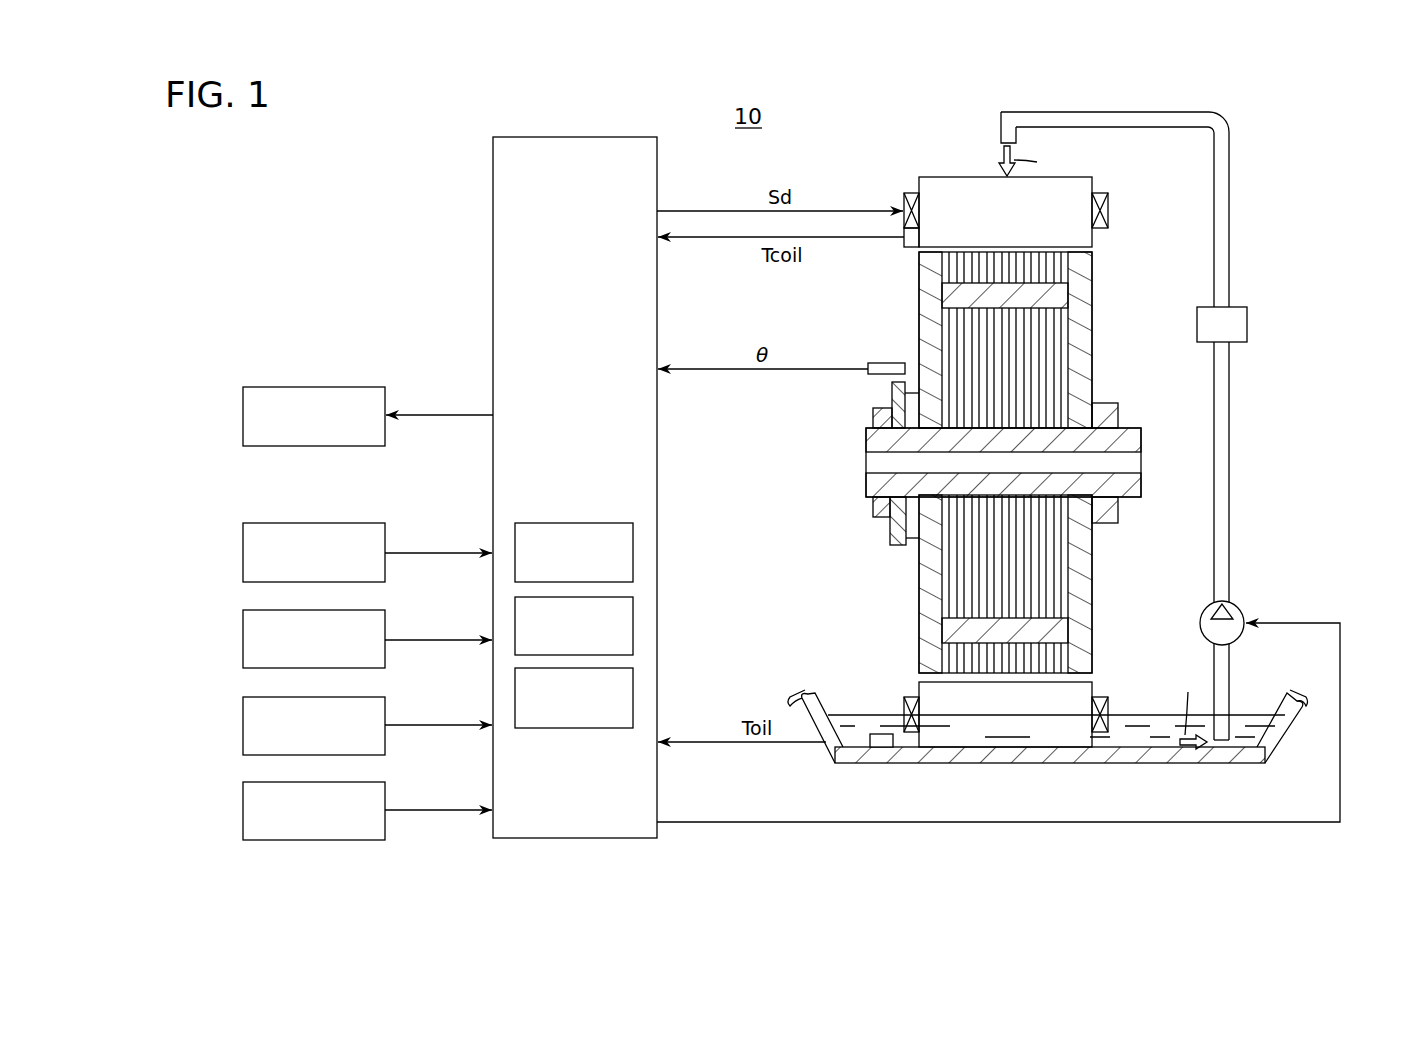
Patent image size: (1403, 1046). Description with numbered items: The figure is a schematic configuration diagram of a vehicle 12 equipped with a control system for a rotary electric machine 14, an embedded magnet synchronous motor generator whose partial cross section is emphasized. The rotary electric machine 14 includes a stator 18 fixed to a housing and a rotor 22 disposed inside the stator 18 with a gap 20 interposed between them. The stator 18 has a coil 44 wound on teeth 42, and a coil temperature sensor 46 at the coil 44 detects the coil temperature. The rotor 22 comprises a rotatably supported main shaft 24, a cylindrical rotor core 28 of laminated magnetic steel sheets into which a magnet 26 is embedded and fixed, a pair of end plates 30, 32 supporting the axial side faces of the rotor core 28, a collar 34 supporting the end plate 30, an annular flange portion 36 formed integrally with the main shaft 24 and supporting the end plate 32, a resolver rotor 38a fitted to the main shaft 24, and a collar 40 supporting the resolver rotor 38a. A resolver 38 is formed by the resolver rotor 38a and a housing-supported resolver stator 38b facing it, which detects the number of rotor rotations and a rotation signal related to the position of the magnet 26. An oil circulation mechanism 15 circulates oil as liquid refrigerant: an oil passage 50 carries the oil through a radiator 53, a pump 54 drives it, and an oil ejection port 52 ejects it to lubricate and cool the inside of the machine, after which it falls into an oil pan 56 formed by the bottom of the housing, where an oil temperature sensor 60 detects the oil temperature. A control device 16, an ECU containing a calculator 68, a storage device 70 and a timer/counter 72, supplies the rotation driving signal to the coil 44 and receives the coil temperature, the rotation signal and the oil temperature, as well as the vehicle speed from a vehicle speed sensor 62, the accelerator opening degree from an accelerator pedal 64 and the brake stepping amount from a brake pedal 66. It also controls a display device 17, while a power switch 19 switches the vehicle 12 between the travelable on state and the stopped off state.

The vehicle 12 is at (437, 172).
The rotary electric machine 14 is at (948, 166).
The oil circulation mechanism 15 is at (1258, 238).
The control device 16 is at (493, 232).
The display device 17 is at (243, 415).
The stator 18 is at (1097, 190).
The power switch 19 is at (243, 810).
The gap 20 is at (1011, 439).
The rotor 22 is at (1011, 460).
The main shaft 24 is at (875, 488).
The magnet 26 is at (1060, 300).
The rotor core 28 is at (1050, 381).
The end plate 30 is at (1082, 334).
The end plate 32 is at (930, 305).
The collar 34 is at (1112, 418).
The annular flange portion 36 is at (912, 545).
The resolver 38 is at (828, 404).
The resolver rotor 38a is at (880, 418).
The resolver stator 38b is at (868, 373).
The collar 40 is at (880, 505).
The teeth 42 is at (1074, 186).
The coil 44 is at (907, 193).
The coil temperature sensor 46 is at (911, 243).
The oil passage 50 is at (1232, 445).
The oil ejection port 52 is at (1000, 146).
The radiator 53 is at (1247, 323).
The pump 54 is at (1205, 612).
The oil pan 56 is at (1280, 703).
The oil temperature sensor 60 is at (880, 750).
The vehicle speed sensor 62 is at (243, 553).
The accelerator pedal 64 is at (243, 640).
The brake pedal 66 is at (243, 725).
The calculator 68 is at (633, 554).
The storage device 70 is at (633, 627).
The timer/counter 72 is at (633, 700).